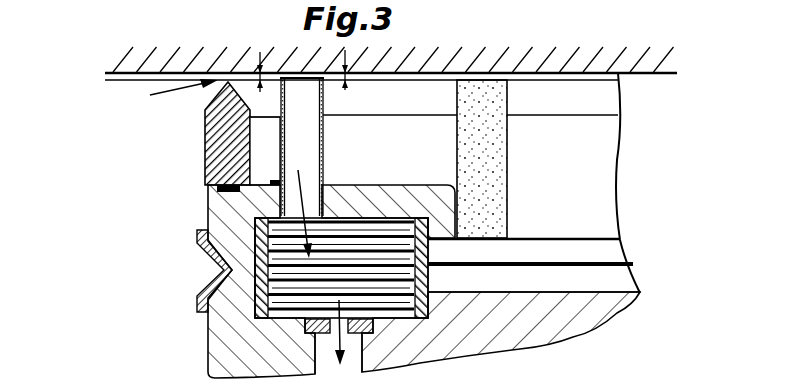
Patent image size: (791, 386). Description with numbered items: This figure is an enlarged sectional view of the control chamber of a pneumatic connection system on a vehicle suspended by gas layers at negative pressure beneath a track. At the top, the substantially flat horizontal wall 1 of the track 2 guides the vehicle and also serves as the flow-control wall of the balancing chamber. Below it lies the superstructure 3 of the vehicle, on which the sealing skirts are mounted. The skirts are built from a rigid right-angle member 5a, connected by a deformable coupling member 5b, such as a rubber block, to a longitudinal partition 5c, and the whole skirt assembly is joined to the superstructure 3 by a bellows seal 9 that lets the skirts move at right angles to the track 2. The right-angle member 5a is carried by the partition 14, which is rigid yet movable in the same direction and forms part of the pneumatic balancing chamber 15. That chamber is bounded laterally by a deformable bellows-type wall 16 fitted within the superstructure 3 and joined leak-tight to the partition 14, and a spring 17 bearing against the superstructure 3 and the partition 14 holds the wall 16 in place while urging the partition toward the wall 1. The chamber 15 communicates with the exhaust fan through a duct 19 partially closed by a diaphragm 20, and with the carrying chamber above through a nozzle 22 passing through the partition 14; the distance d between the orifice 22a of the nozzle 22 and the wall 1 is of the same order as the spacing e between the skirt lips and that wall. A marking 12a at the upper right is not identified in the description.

The wall 1 is at (587, 71).
The track 2 is at (588, 60).
The superstructure 3 is at (223, 340).
The rigid right-angle member 5a is at (205, 136).
The deformable coupling member 5b is at (497, 138).
The longitudinal partition 5c is at (608, 148).
The bellows seal 9 is at (217, 260).
The element 12a is at (569, 8).
The partition 14 is at (338, 193).
The pneumatic balancing chamber 15 is at (350, 232).
The deformable bellows-type wall 16 is at (423, 280).
The spring 17 is at (423, 248).
The duct 19 is at (357, 355).
The diaphragm 20 is at (377, 325).
The nozzle 22 is at (326, 128).
The orifice 22a is at (310, 73).